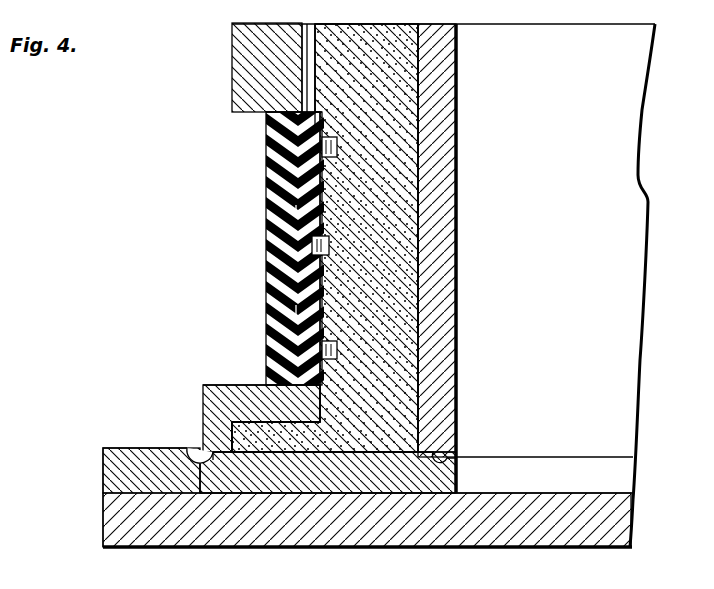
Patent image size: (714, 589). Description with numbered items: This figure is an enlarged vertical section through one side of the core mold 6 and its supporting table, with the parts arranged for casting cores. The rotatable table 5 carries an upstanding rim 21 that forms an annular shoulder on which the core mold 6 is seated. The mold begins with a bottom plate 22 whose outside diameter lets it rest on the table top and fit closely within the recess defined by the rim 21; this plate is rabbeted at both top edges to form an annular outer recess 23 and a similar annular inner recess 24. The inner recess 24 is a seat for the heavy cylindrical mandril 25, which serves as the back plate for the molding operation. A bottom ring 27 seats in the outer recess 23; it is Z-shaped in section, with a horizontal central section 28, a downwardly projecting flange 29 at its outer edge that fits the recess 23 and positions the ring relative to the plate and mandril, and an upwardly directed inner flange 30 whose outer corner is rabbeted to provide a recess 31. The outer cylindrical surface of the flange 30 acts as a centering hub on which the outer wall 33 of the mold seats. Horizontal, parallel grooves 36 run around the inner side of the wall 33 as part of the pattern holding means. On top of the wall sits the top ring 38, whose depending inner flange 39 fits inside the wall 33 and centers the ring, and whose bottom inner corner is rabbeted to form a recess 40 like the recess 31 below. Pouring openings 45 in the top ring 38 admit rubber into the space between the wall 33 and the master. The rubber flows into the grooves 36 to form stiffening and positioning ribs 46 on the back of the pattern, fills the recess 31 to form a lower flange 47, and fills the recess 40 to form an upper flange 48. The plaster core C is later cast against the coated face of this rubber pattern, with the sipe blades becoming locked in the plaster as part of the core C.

The rotatable table 5 is at (452, 550).
The core mold 6 is at (262, 178).
The upstanding rim 21 is at (118, 458).
The bottom plate 22 is at (452, 478).
The annular outer recess 23 is at (181, 448).
The annular inner recess 24 is at (457, 457).
The cylindrical mandril 25 is at (444, 182).
The bottom ring 27 is at (253, 378).
The horizontal central section 28 is at (240, 386).
The downwardly projecting flange 29 is at (213, 437).
The upwardly directed inner flange 30 is at (320, 392).
The recess 31 is at (320, 372).
The outer wall 33 is at (268, 160).
The grooves 36 is at (292, 208).
The top ring 38 is at (240, 61).
The depending inner flange 39 is at (313, 93).
The recess 40 is at (270, 128).
The pouring openings 45 is at (303, 58).
The stiffening and positioning ribs 46 is at (280, 231).
The lower flange 47 is at (303, 386).
The flange 48 is at (308, 108).
The core C is at (418, 301).